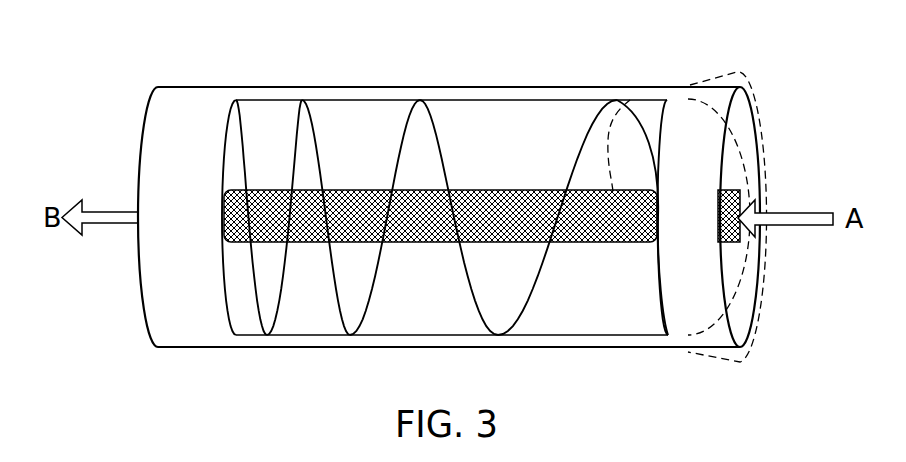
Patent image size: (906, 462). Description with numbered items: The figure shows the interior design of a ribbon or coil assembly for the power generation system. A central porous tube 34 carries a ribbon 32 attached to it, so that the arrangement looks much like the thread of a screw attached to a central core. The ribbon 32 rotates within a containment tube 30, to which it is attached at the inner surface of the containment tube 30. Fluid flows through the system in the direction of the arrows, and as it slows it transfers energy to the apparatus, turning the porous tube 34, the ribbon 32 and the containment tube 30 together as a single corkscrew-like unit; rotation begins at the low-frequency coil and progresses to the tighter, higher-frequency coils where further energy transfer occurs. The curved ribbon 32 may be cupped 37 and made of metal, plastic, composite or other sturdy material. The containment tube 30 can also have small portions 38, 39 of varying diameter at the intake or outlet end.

The containment tube 30 is at (500, 87).
The ribbon 32 is at (319, 128).
The porous tube 34 is at (612, 248).
The cupped ribbon 37 is at (630, 100).
The small portion of varying diameter 38 is at (707, 103).
The small portion of varying diameter 39 is at (736, 74).